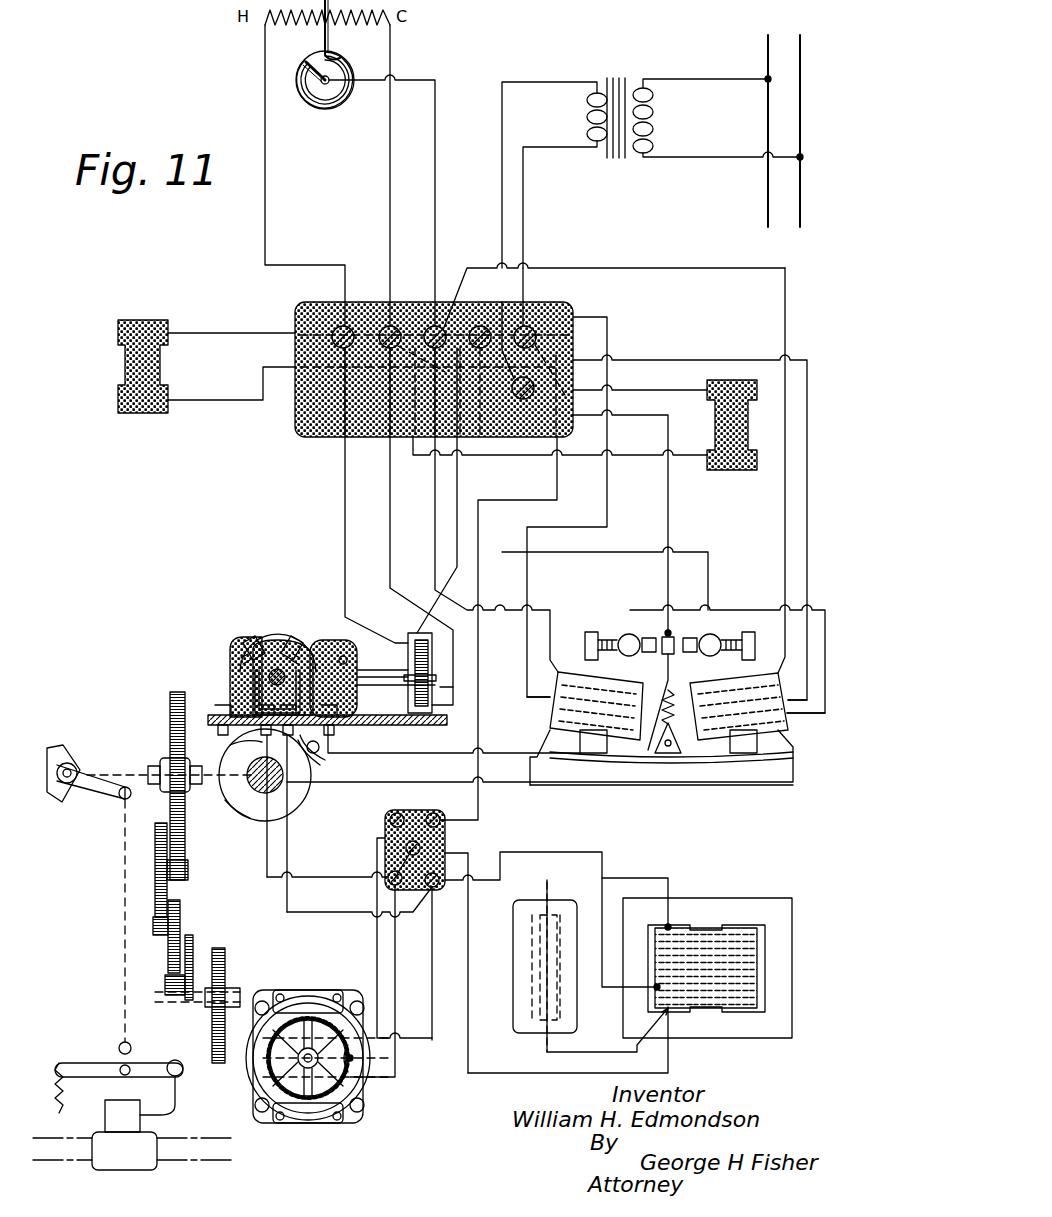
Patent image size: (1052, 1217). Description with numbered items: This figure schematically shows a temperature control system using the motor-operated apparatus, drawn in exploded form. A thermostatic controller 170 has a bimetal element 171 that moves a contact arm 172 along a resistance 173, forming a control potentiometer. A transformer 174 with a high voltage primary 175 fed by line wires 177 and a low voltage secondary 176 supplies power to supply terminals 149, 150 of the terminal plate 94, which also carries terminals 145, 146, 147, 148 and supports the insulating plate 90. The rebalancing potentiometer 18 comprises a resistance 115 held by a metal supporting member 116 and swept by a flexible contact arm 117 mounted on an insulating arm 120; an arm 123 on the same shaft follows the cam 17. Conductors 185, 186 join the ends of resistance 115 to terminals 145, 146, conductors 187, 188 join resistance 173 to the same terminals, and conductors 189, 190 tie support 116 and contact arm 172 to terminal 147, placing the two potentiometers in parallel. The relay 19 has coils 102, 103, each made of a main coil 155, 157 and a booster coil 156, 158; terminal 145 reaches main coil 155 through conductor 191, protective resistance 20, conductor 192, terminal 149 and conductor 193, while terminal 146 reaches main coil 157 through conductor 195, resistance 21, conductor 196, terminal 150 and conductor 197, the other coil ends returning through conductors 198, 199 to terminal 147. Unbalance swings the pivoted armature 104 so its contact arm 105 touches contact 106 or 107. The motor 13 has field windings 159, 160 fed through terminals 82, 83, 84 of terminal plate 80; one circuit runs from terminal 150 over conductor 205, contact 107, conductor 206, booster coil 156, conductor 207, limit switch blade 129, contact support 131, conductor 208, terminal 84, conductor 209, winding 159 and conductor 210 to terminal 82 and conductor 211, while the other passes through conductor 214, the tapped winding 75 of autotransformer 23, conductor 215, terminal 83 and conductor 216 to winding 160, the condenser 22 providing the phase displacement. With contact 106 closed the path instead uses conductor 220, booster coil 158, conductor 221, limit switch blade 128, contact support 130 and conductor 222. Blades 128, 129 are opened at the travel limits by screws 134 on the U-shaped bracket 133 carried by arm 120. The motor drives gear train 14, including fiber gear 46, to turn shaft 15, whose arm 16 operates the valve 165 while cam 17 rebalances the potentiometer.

The motor unit 13 is at (305, 988).
The gear train 14 is at (188, 912).
The shaft 15 is at (150, 762).
The arm 16 is at (118, 796).
The cam 17 is at (241, 808).
The potentiometer 18 is at (438, 688).
The relay 19 is at (583, 766).
The resistance 20 is at (118, 372).
The resistance 21 is at (750, 420).
The condenser 22 is at (514, 976).
The transformer 23 is at (706, 898).
The fiber gear 46 is at (225, 968).
The winding 75 is at (760, 950).
The terminal plate 80 is at (395, 820).
The terminal 82 is at (434, 814).
The terminal 83 is at (388, 882).
The terminal 84 is at (434, 888).
The insulating plate 90 is at (375, 726).
The terminal plate 94 is at (298, 430).
The relay coil 102 is at (556, 665).
The relay coil 103 is at (765, 678).
The pivoted armature 104 is at (623, 760).
The contact arm 105 is at (671, 672).
The contact 106 is at (651, 640).
The contact 107 is at (696, 640).
The resistance 115 is at (430, 668).
The supporting member 116 is at (414, 633).
The contact arm 117 is at (383, 672).
The arm 120 is at (346, 654).
The arm 123 is at (318, 753).
The switch blade 128 is at (236, 682).
The switch blade 129 is at (352, 690).
The contact carrying member 130 is at (262, 640).
The contact carrying member 131 is at (292, 640).
The U-shaped bracket 133 is at (278, 630).
The screw 134 is at (250, 648).
The terminal 145 is at (340, 326).
The terminal 146 is at (385, 326).
The terminal 147 is at (432, 326).
The terminal 148 is at (480, 326).
The supply terminal 149 is at (530, 326).
The supply terminal 150 is at (524, 400).
The main coil 155 is at (604, 692).
The booster coil 156 is at (582, 740).
The main coil 157 is at (742, 686).
The booster coil 158 is at (762, 742).
The field winding 159 is at (330, 998).
The field winding 160 is at (346, 1120).
The valve 165 is at (158, 1138).
The thermostatic controller 170 is at (290, 72).
The bimetal element 171 is at (323, 108).
The contact arm 172 is at (333, 38).
The resistance 173 is at (298, 25).
The transformer 174 is at (626, 78).
The high voltage primary 175 is at (656, 120).
The low voltage secondary 176 is at (586, 118).
The line wires 177 is at (800, 122).
The conductor 185 is at (345, 523).
The conductor 186 is at (390, 540).
The conductor 187 is at (265, 238).
The conductor 188 is at (390, 207).
The conductor 189 is at (457, 492).
The conductor 190 is at (435, 212).
The conductor 191 is at (208, 333).
The conductor 192 is at (218, 400).
The conductor 193 is at (607, 333).
The conductor 195 is at (413, 456).
The conductor 196 is at (670, 390).
The conductor 197 is at (736, 360).
The conductor 198 is at (435, 547).
The conductor 199 is at (785, 548).
The conductor 205 is at (668, 520).
The conductor 206 is at (710, 590).
The conductor 207 is at (434, 755).
The conductor 208 is at (288, 866).
The conductor 209 is at (468, 988).
The conductor 210 is at (377, 944).
The conductor 211 is at (478, 735).
The conductor 214 is at (568, 852).
The conductor 215 is at (508, 1073).
The conductor 216 is at (396, 988).
The conductor 220 is at (714, 610).
The conductor 221 is at (680, 788).
The conductor 222 is at (267, 856).